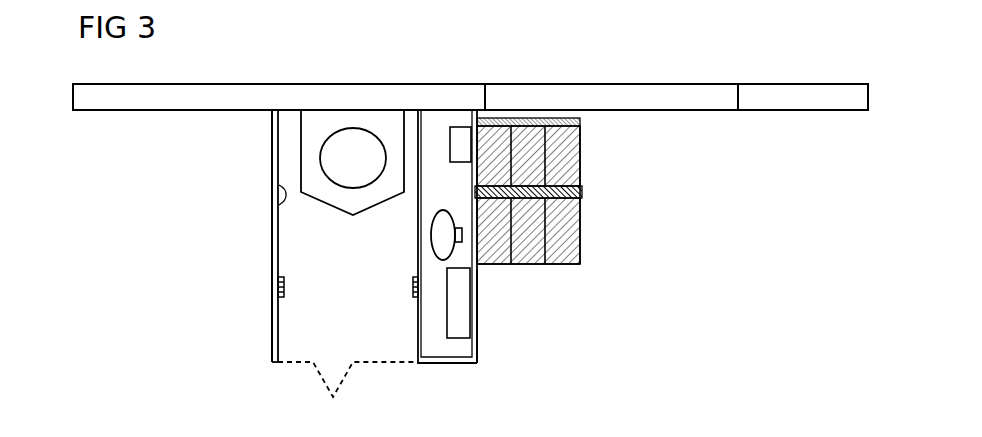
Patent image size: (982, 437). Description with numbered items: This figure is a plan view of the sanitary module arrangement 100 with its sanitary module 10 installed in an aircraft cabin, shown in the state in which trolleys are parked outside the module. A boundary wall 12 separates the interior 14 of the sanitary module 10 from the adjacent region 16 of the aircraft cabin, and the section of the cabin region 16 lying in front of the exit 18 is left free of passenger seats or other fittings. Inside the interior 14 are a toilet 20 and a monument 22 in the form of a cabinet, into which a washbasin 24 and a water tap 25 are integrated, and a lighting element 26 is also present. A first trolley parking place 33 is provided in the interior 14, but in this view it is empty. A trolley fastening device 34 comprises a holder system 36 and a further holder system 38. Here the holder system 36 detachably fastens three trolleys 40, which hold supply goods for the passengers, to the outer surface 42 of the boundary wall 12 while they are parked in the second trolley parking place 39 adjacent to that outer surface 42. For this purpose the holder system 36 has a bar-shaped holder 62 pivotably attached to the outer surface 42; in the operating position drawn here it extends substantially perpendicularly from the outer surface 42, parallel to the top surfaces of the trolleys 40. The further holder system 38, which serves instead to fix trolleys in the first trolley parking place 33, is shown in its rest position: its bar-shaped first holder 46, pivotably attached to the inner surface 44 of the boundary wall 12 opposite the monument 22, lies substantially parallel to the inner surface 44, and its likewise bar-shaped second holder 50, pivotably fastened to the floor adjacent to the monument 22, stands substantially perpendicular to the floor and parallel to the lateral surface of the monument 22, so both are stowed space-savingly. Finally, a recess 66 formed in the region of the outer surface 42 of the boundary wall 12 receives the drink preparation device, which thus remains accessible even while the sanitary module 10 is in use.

The sanitary module 10 is at (636, 270).
The boundary wall 12 is at (268, 166).
The interior 14 is at (290, 133).
The region of the aircraft cabin 16 is at (591, 122).
The exit 18 is at (693, 97).
The toilet 20 is at (341, 120).
The monument 22 is at (431, 130).
The washbasin 24 is at (444, 230).
The water tap 25 is at (456, 237).
The lighting element 26 is at (460, 140).
The first trolley parking place 33 is at (292, 318).
The trolley fastening device 34 is at (256, 284).
The holder system 36 is at (628, 224).
The further holder system 38 is at (312, 291).
The second trolley parking place 39 is at (582, 268).
The trolleys 40 is at (494, 264).
The outer surface 42 is at (478, 316).
The inner surface 44 is at (283, 203).
The first holder 46 is at (285, 287).
The second holder 50 is at (412, 287).
The holder 62 is at (581, 186).
The recess 66 is at (462, 292).
The sanitary module arrangement 100 is at (700, 146).